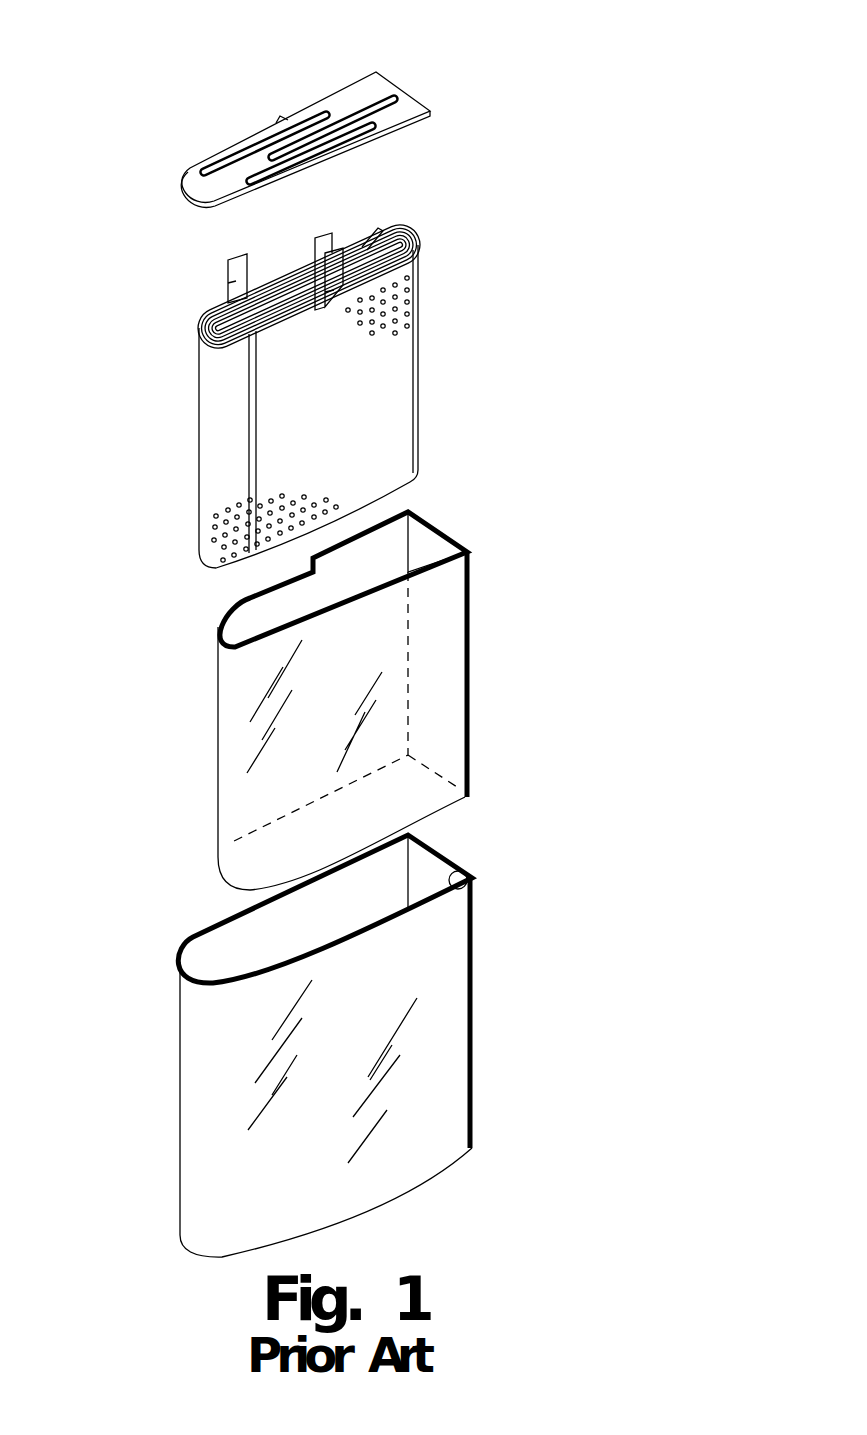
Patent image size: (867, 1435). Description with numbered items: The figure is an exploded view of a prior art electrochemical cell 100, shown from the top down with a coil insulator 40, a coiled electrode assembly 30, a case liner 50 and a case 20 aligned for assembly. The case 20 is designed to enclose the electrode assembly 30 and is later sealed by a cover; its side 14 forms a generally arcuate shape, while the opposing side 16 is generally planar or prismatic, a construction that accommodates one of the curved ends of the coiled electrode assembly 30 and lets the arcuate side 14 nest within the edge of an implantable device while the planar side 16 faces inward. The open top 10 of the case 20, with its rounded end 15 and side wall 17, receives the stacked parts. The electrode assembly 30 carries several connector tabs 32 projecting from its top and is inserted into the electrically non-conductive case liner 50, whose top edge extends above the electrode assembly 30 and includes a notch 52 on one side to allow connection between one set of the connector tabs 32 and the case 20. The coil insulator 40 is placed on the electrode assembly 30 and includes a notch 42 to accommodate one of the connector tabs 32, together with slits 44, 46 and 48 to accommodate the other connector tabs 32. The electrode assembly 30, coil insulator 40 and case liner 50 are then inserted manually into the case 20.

The battery 100 is at (122, 1243).
The coil insulator 40 is at (422, 66).
The notch 42 is at (248, 142).
The slit 44 is at (280, 116).
The slit 46 is at (360, 112).
The slit 48 is at (363, 140).
The coiled electrode assembly 30 is at (463, 297).
The connector tabs 32 is at (228, 282).
The case liner 50 is at (528, 634).
The notch 52 is at (240, 602).
The case 20 is at (538, 932).
The housing opening 10 is at (437, 850).
The rounded end of housing rim 15 is at (235, 957).
The opposing side 16 is at (475, 882).
The arcuate side 14 is at (203, 1143).
The side wall 17 is at (428, 1092).